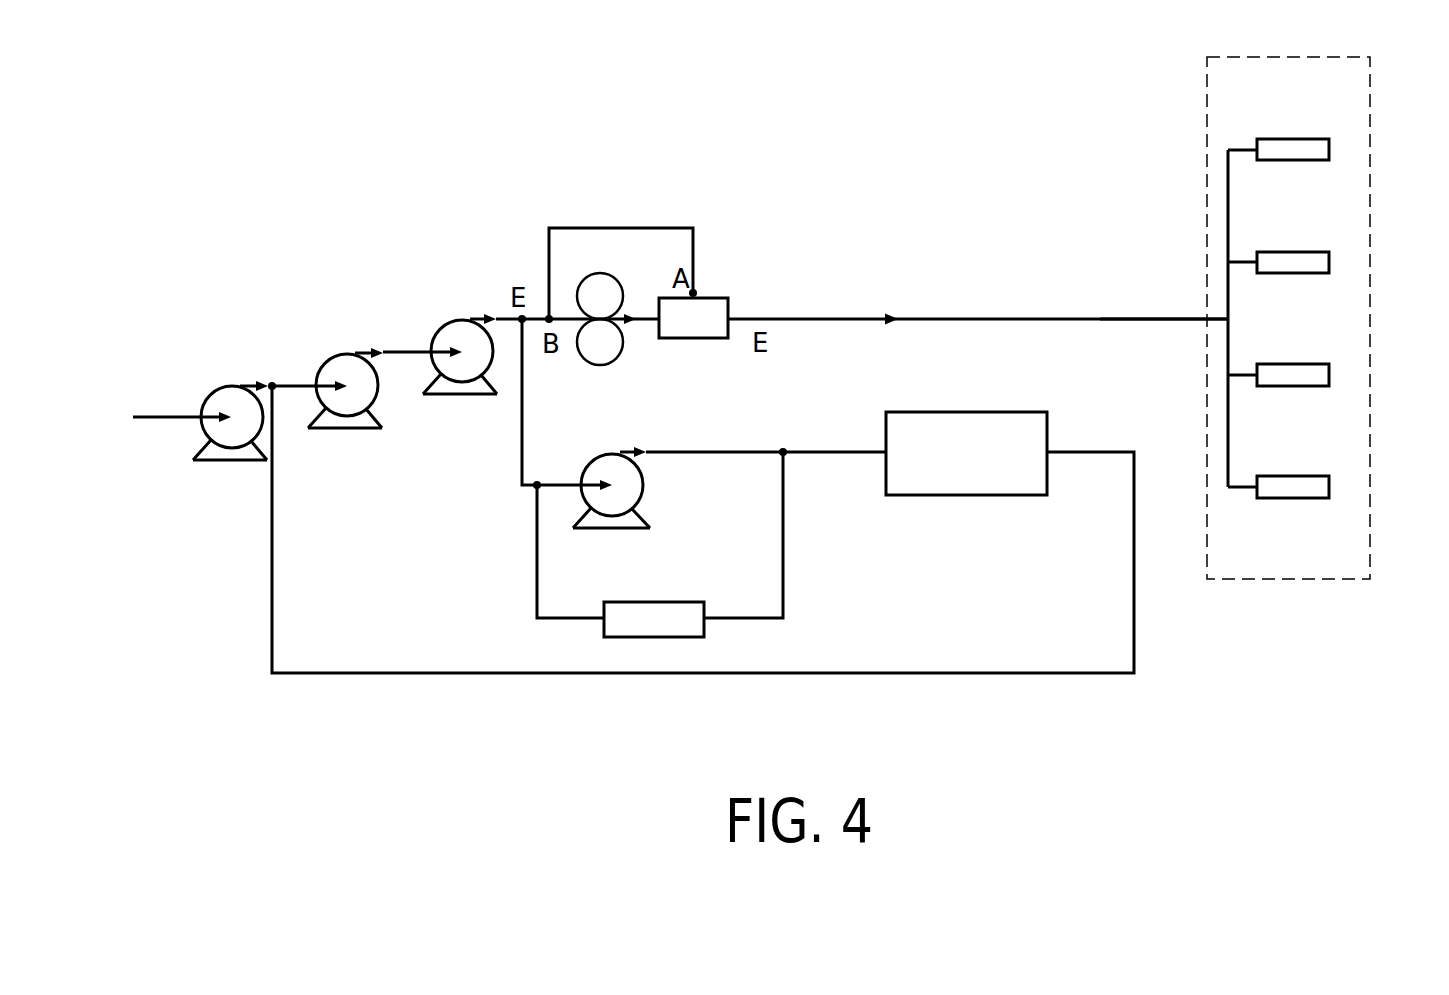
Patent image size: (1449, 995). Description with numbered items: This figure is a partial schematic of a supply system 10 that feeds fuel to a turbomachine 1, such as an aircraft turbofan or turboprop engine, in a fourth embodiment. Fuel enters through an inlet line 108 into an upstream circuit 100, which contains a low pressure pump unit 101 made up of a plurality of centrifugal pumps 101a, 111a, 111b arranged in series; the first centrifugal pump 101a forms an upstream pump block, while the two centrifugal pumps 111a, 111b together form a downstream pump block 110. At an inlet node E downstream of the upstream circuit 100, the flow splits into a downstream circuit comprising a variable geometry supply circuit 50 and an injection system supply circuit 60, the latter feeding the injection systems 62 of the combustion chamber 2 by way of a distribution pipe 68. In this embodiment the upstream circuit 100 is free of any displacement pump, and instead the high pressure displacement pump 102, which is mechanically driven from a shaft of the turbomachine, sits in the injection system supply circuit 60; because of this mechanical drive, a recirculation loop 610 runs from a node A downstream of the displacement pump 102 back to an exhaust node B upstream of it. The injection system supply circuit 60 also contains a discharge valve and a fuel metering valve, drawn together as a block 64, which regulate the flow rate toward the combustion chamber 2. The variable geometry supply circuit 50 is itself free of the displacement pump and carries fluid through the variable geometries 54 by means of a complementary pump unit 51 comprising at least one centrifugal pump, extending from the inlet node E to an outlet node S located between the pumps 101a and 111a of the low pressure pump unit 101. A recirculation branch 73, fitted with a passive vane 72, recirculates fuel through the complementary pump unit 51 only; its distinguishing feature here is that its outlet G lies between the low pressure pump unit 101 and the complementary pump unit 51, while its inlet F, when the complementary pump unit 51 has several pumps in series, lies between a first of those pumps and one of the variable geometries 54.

The turbomachine 1 is at (1050, 740).
The combustion chamber 2 is at (1317, 323).
The supply system 10 is at (822, 222).
The variable geometry supply circuit 50 is at (703, 543).
The complementary pump unit 51 is at (623, 523).
The variable geometries 54 is at (1002, 483).
The injection system supply circuit 60 is at (860, 297).
The injection systems 62 is at (1293, 152).
The block 64 is at (717, 297).
The distribution pipe 68 is at (1102, 316).
The vane 72 is at (700, 627).
The recirculation branch 73 is at (783, 543).
The upstream circuit 100 is at (152, 373).
The low pressure pump unit 101 is at (352, 404).
The centrifugal pump 101a is at (230, 437).
The high pressure displacement pump 102 is at (600, 343).
The inlet line 108 is at (172, 422).
The downstream pump block 110 is at (402, 415).
The centrifugal pump 111a is at (333, 422).
The centrifugal pump 111b is at (477, 388).
The recirculation loop 610 is at (628, 230).